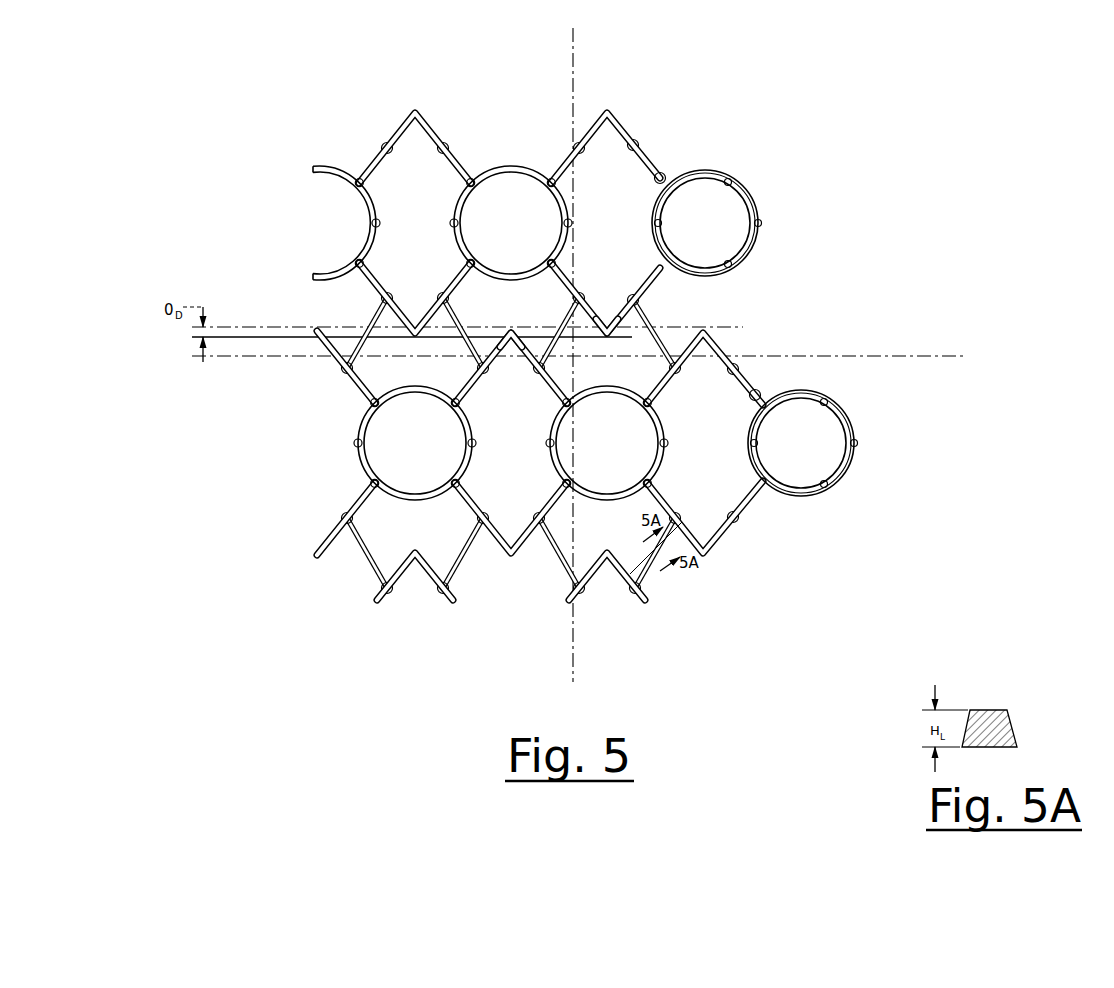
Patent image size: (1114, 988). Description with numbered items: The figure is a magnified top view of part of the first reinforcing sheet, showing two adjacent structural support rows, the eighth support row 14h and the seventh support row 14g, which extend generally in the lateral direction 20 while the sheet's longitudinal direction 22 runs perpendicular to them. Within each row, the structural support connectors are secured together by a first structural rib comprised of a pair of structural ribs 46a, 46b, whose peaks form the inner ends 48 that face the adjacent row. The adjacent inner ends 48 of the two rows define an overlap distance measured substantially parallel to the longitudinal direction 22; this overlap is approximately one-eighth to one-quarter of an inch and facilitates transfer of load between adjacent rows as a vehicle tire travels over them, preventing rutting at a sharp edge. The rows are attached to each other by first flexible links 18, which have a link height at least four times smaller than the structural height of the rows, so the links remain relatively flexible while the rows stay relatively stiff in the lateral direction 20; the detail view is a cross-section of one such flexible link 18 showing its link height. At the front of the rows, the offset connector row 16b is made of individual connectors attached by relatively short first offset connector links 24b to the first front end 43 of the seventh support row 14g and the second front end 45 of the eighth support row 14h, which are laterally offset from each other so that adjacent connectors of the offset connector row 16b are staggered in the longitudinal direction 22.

In FIG. 5, the eighth support row 14h is at (272, 228).
In FIG. 5, the seventh support row 14g is at (256, 443).
In FIG. 5, the offset connector row 16b is at (509, 336).
In FIG. 5, the first flexible link 18 is at (372, 315).
In FIG. 5A, the first flexible link 18 is at (1006, 709).
In FIG. 5, the lateral direction 20 is at (878, 356).
In FIG. 5, the longitudinal direction 22 is at (576, 61).
In FIG. 5, the first offset connector link 24b is at (672, 178).
In FIG. 5, the first front end 43 is at (758, 390).
In FIG. 5, the second front end 45 is at (661, 170).
In FIG. 5, the structural rib 46a is at (386, 140).
In FIG. 5, the structural rib 46b is at (437, 298).
In FIG. 5, the inner end 48 is at (511, 329).